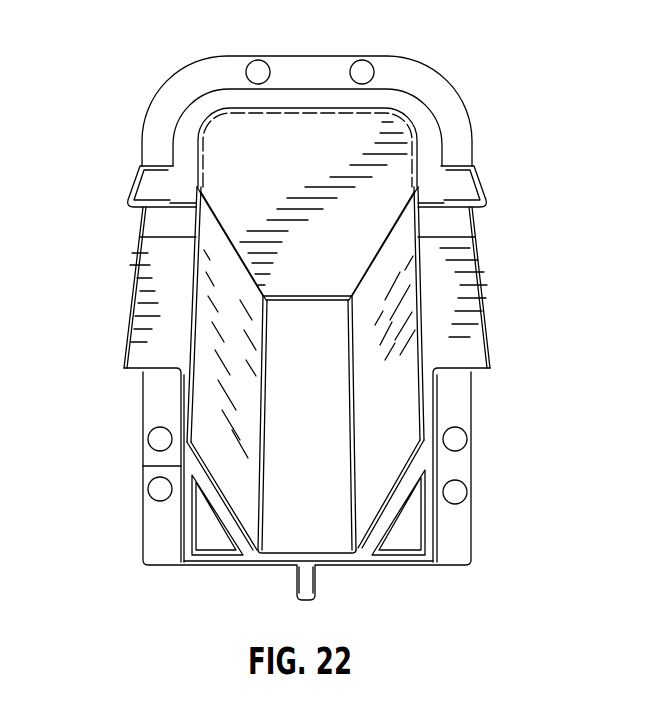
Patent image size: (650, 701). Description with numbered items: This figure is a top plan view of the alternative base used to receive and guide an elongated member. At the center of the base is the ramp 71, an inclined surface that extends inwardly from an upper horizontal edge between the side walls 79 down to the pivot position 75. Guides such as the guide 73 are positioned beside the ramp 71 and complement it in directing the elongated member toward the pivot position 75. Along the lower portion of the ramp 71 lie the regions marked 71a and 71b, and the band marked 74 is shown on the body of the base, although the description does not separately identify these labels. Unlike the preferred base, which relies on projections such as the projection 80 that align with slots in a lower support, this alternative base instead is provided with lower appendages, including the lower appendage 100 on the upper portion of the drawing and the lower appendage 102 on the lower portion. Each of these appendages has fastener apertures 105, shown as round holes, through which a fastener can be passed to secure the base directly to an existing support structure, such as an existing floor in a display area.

The lower appendage 100 is at (178, 88).
The fastener apertures 105 is at (266, 60).
The pivot position 75 is at (162, 223).
The upper band 74 is at (124, 240).
The guide 73 is at (148, 325).
The ramp 71 is at (287, 507).
The right funnel gusset 71a is at (395, 427).
The left funnel gusset 71b is at (213, 422).
The side walls 79 is at (178, 466).
The lower appendage 102 is at (155, 545).
The projection 80 is at (317, 581).